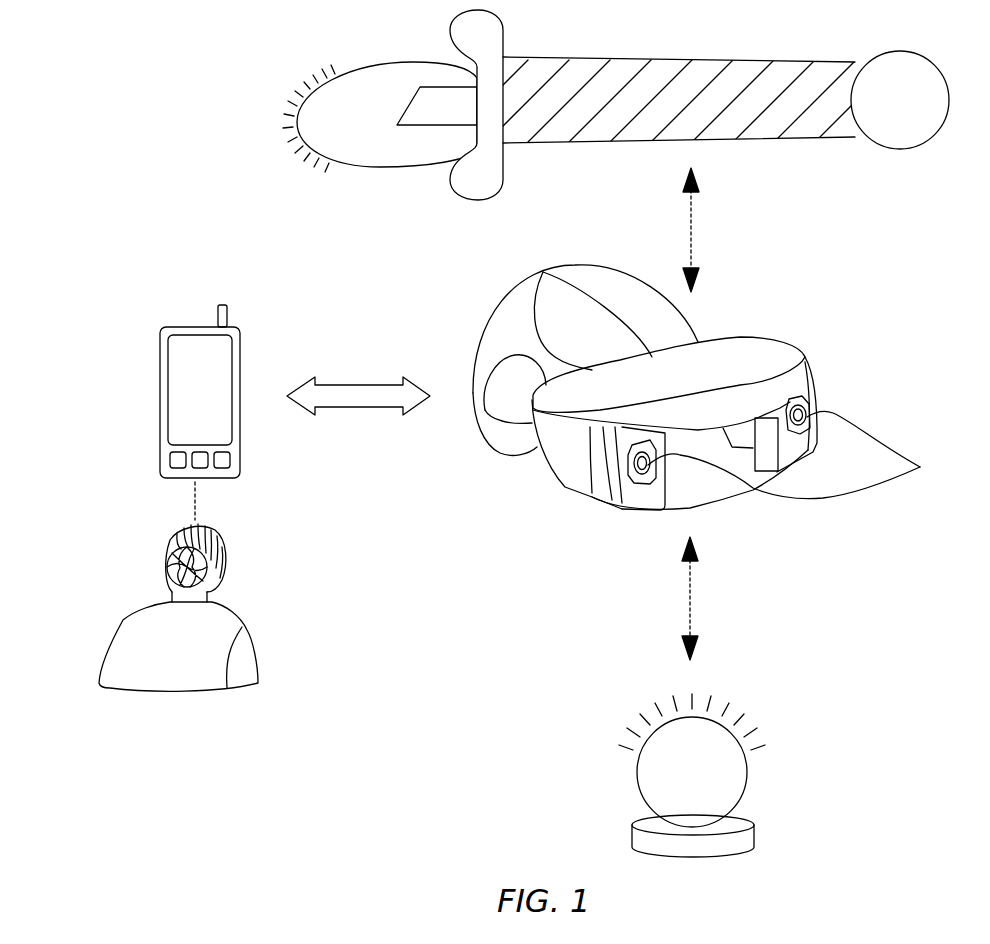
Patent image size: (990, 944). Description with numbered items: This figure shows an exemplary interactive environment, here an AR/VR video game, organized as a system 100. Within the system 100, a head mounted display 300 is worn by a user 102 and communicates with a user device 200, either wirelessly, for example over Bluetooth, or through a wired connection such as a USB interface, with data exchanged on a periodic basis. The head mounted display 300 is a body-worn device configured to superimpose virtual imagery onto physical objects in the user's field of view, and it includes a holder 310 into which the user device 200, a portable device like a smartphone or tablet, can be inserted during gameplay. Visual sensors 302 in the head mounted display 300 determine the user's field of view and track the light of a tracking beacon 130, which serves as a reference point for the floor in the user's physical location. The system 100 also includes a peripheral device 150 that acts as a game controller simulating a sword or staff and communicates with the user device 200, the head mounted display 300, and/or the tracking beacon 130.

The system 100 is at (93, 39).
The user 102 is at (175, 712).
The tracking beacon 130 is at (755, 833).
The peripheral device 150 is at (748, 62).
The user device 200 is at (172, 325).
The head mounted display 300 is at (760, 325).
The visual sensors 302 is at (920, 467).
The holder 310 is at (727, 522).